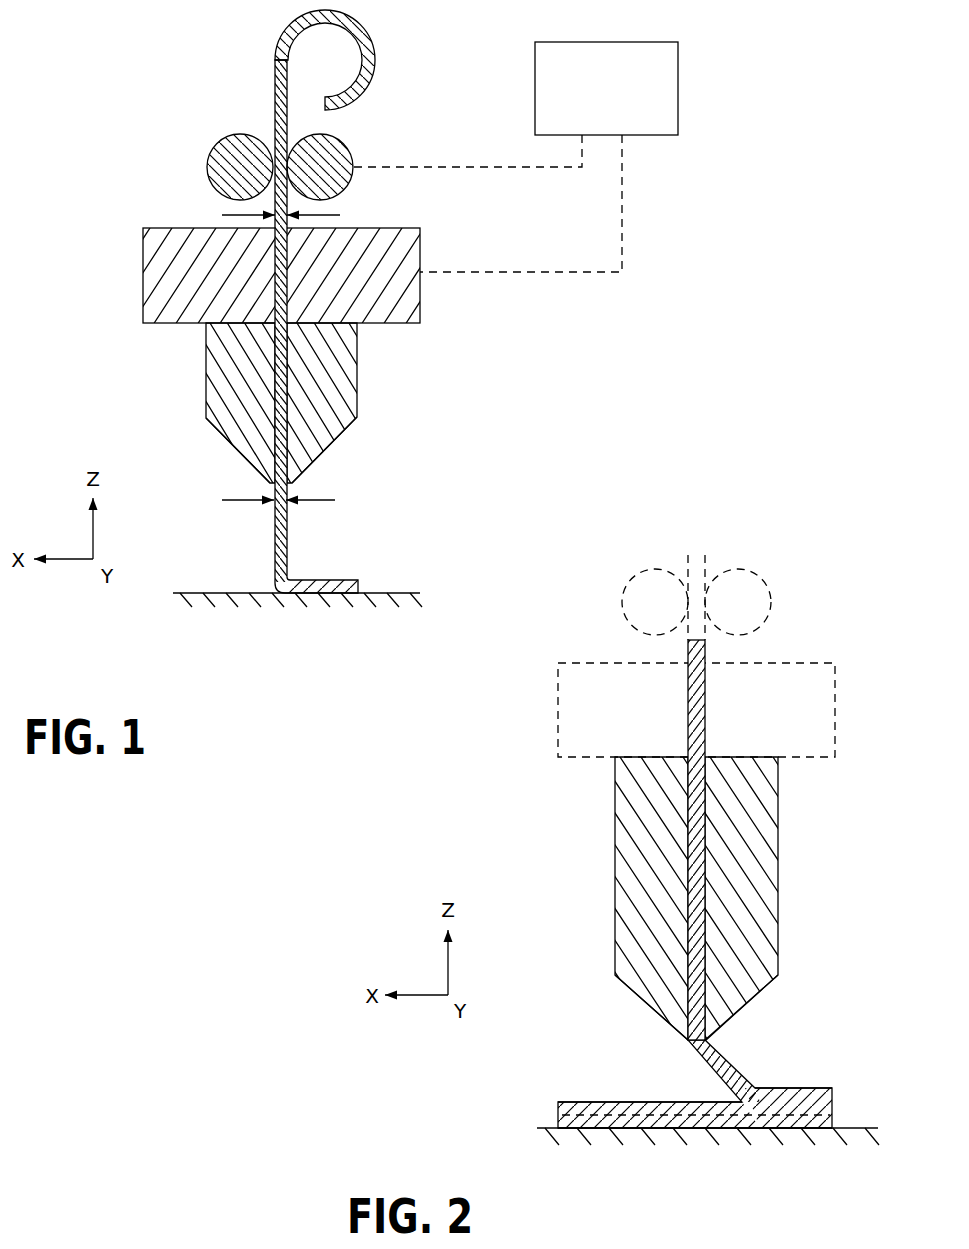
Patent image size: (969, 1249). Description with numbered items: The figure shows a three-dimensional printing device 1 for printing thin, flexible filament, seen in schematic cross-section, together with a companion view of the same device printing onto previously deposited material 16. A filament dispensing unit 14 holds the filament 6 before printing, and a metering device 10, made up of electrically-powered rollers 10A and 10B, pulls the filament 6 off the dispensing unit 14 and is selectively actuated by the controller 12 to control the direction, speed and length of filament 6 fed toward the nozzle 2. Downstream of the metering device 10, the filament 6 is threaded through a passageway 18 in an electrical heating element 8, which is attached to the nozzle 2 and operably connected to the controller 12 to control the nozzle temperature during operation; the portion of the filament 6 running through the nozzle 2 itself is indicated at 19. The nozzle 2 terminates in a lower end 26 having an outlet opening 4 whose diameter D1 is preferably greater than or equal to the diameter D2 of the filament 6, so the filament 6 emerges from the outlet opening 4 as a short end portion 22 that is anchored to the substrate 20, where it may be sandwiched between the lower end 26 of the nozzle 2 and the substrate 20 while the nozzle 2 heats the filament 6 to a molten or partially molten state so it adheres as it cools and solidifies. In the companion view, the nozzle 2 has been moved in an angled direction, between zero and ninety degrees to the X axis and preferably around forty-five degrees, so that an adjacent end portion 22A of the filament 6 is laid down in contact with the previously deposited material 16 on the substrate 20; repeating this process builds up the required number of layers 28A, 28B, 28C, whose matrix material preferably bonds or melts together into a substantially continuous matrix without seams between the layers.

In FIG. 1, the 3D printing device 1 is at (382, 308).
In FIG. 2, the 3D printing device 1 is at (685, 850).
In FIG. 1, the nozzle 2 is at (268, 410).
In FIG. 2, the nozzle 2 is at (685, 913).
In FIG. 1, the outlet opening 4 is at (292, 484).
In FIG. 2, the outlet opening 4 is at (686, 1040).
In FIG. 1, the filament 6 is at (272, 532).
In FIG. 2, the filament 6 is at (708, 725).
In FIG. 1, the electrical heating element 8 is at (143, 268).
In FIG. 2, the electrical heating element 8 is at (556, 700).
In FIG. 1, the metering device 10 is at (285, 147).
In FIG. 2, the metering device 10 is at (772, 586).
In FIG. 1, the roller 10A is at (227, 136).
In FIG. 1, the roller 10B is at (341, 140).
In FIG. 1, the controller 12 is at (678, 82).
In FIG. 1, the filament dispensing unit 14 is at (336, 61).
In FIG. 2, the previously deposited material 16 is at (607, 1100).
In FIG. 1, the passageway 18 is at (288, 252).
In FIG. 1, the nozzle passage 19 is at (292, 420).
In FIG. 2, the nozzle passage 19 is at (708, 920).
In FIG. 1, the substrate 20 is at (373, 592).
In FIG. 2, the substrate 20 is at (863, 1126).
In FIG. 1, the end portion 22 is at (308, 580).
In FIG. 2, the end portion 22 is at (798, 1088).
In FIG. 2, the adjacent end portion 22A is at (745, 1072).
In FIG. 1, the lower end 26 is at (270, 483).
In FIG. 2, the lower end 26 is at (710, 1043).
In FIG. 2, the layer 28A is at (560, 1124).
In FIG. 2, the layer 28B is at (558, 1104).
In FIG. 2, the layer 28C is at (833, 1092).
In FIG. 1, the outlet opening diameter D1 is at (264, 499).
In FIG. 1, the filament diameter D2 is at (263, 214).